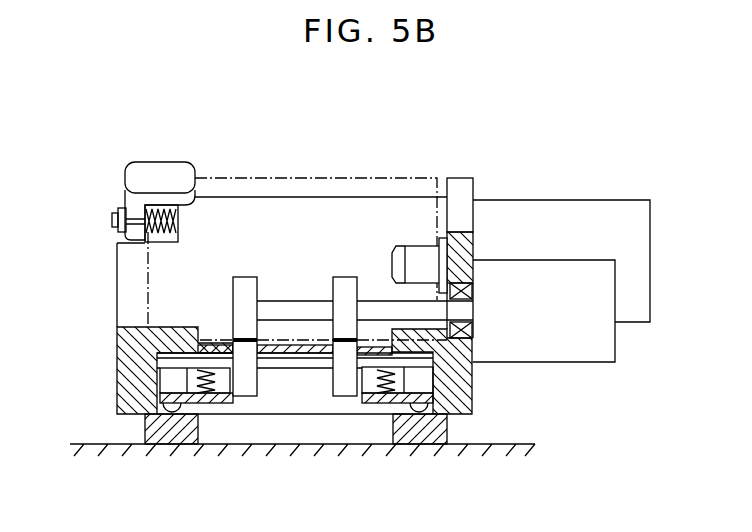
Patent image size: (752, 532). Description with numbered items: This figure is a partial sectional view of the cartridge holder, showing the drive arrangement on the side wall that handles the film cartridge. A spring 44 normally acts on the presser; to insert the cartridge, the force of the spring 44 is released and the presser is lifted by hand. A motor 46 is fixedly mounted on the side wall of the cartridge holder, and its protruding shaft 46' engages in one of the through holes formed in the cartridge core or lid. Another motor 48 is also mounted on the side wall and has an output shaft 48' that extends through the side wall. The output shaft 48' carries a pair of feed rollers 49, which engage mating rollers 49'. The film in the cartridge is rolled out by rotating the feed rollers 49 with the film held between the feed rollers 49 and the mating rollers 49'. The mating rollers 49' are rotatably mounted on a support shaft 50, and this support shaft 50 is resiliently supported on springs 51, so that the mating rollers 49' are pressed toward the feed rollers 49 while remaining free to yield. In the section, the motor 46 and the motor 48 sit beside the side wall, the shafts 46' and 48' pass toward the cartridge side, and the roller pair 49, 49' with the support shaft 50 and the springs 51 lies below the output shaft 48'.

The spring 44 is at (162, 233).
The motor 46 is at (561, 226).
The protruding shaft 46' is at (415, 211).
The motor 48 is at (553, 346).
The output shaft 48' is at (365, 265).
The feed rollers 49 is at (291, 302).
The mating rollers 49' is at (295, 426).
The support shaft 50 is at (290, 367).
The springs 51 is at (381, 482).